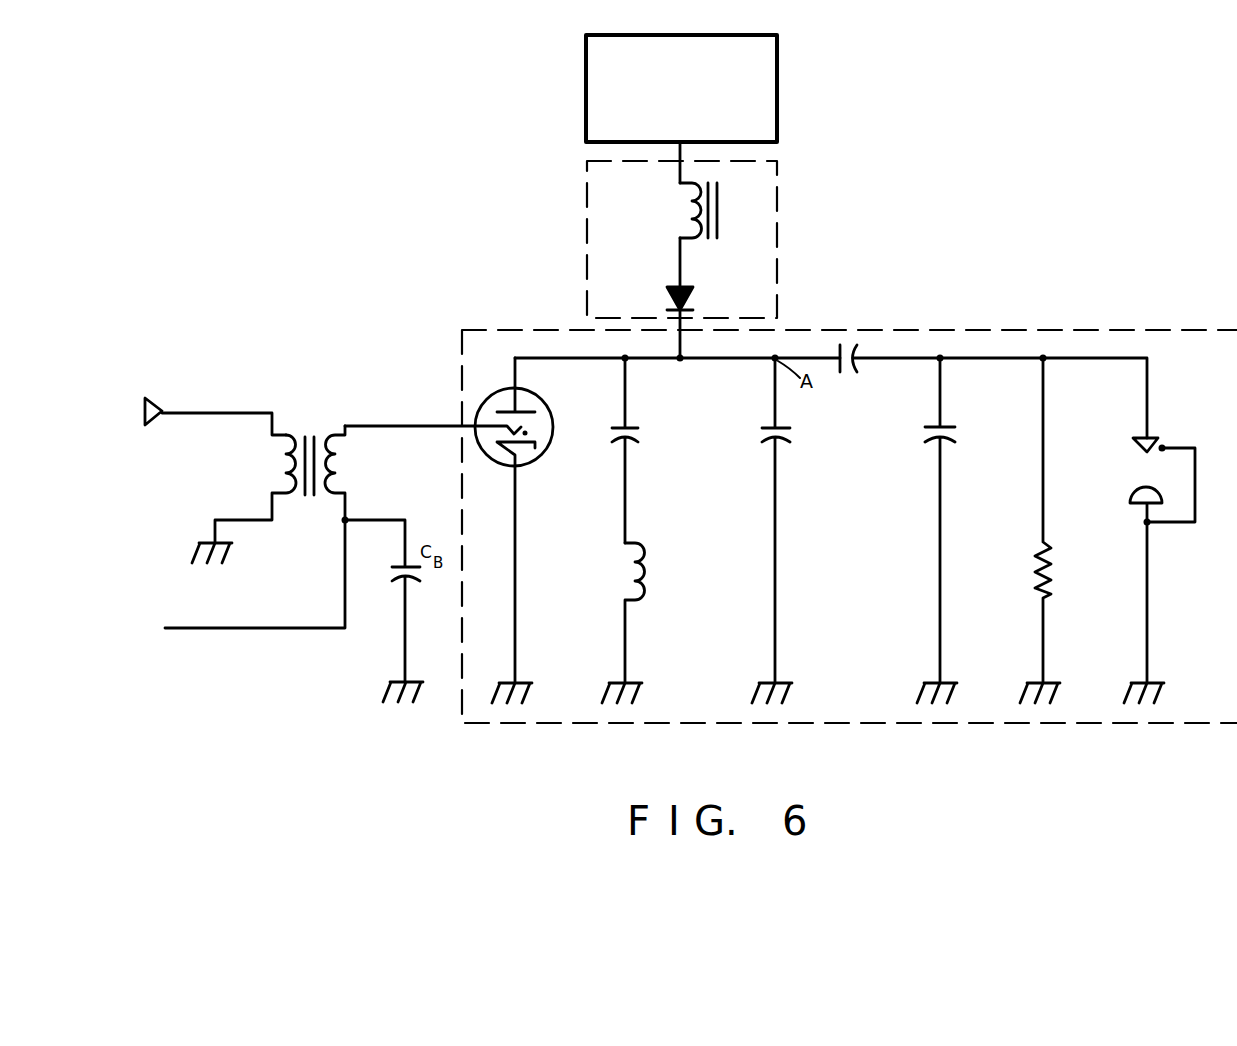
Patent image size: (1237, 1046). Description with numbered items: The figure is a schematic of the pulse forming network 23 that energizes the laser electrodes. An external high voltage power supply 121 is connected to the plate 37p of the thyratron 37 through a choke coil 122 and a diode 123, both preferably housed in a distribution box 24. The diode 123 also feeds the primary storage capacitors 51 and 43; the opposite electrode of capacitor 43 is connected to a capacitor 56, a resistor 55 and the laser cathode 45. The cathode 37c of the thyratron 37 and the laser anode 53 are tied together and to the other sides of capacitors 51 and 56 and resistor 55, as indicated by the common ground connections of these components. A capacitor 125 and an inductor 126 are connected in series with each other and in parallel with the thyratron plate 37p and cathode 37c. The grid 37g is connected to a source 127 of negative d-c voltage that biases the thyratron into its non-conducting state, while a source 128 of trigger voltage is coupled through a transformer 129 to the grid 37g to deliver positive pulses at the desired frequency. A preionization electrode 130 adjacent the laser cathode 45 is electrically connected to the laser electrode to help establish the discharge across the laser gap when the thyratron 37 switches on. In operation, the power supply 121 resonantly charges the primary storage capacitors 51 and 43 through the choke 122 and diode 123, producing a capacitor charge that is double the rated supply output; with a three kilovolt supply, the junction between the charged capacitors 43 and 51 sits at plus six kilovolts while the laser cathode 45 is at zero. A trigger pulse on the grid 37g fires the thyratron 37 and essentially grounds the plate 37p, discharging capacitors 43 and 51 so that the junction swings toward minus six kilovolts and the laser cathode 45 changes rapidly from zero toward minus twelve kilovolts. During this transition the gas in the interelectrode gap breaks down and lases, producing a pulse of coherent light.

The high voltage power supply 121 is at (586, 103).
The choke coil 122 is at (682, 212).
The diode 123 is at (670, 297).
The distribution box 24 is at (777, 197).
The pulse forming network 23 is at (1114, 332).
The source of trigger voltage 128 is at (152, 400).
The transformer 129 is at (308, 435).
The thyratron 37 is at (487, 393).
The plate 37p is at (527, 410).
The grid 37g is at (521, 425).
The cathode 37c is at (525, 444).
The capacitor 125 is at (632, 424).
The inductor 126 is at (633, 543).
The primary storage capacitor 43 is at (856, 366).
The primary storage capacitor 51 is at (783, 442).
The capacitor 56 is at (930, 443).
The resistor 55 is at (1043, 564).
The laser cathode 45 is at (1151, 435).
The preionization electrode 130 is at (1163, 447).
The laser anode 53 is at (1134, 492).
The source of negative d-c voltage 127 is at (189, 630).